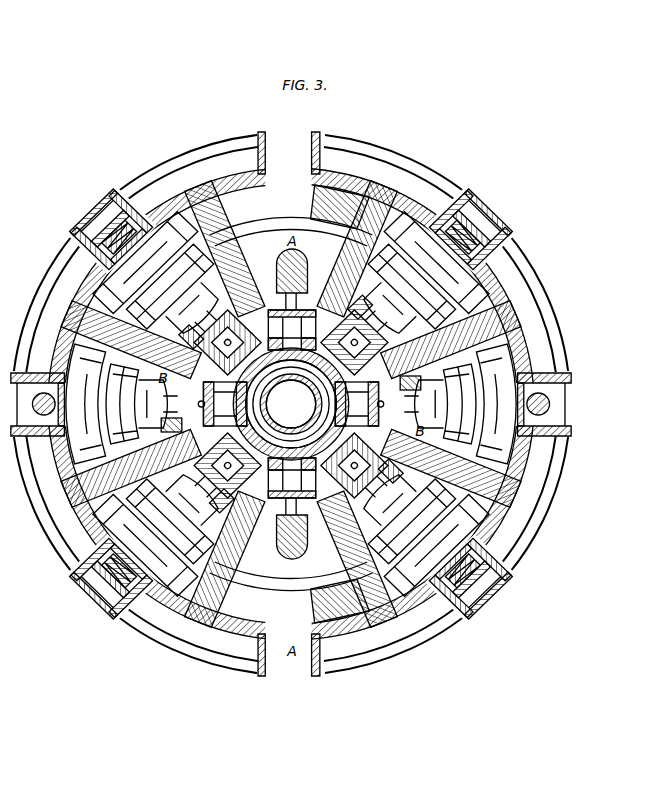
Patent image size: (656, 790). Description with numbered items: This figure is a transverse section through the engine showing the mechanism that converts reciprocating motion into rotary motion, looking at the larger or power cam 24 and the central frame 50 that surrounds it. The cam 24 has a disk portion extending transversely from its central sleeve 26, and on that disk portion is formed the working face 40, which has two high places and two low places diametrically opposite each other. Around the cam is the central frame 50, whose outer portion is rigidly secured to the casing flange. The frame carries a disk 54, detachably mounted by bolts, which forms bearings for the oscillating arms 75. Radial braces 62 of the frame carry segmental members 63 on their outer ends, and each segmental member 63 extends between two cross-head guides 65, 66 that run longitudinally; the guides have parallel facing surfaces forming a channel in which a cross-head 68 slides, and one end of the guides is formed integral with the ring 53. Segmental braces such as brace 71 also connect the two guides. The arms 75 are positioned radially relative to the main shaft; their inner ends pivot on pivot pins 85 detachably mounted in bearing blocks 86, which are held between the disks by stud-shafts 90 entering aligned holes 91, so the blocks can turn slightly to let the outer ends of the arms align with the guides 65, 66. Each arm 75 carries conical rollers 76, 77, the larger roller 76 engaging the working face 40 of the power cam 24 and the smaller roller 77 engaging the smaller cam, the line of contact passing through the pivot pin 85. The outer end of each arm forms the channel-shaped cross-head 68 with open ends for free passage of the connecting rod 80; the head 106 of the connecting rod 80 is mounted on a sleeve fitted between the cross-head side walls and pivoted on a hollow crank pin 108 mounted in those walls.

The cam 24 is at (278, 200).
The central sleeve 26 is at (291, 404).
The working face 40 is at (345, 188).
The central frame 50 is at (196, 171).
The ring 53 is at (325, 178).
The disk 54 is at (287, 318).
The radial brace 62 is at (218, 186).
The segmental member 63 is at (398, 205).
The cross-head guide 65 is at (262, 140).
The cross-head guide 66 is at (316, 140).
The cross-head 68 is at (90, 232).
The segmental brace 71 is at (415, 172).
The oscillating arm 75 is at (208, 320).
The roller 76 is at (100, 290).
The roller 77 is at (520, 275).
The connecting rod 80 is at (548, 405).
The pivot pin 85 is at (212, 325).
The bearing block 86 is at (312, 305).
The stud-shaft 90 is at (235, 352).
The hole 91 is at (192, 342).
The head 106 is at (100, 212).
The hollow crank pin 108 is at (75, 253).